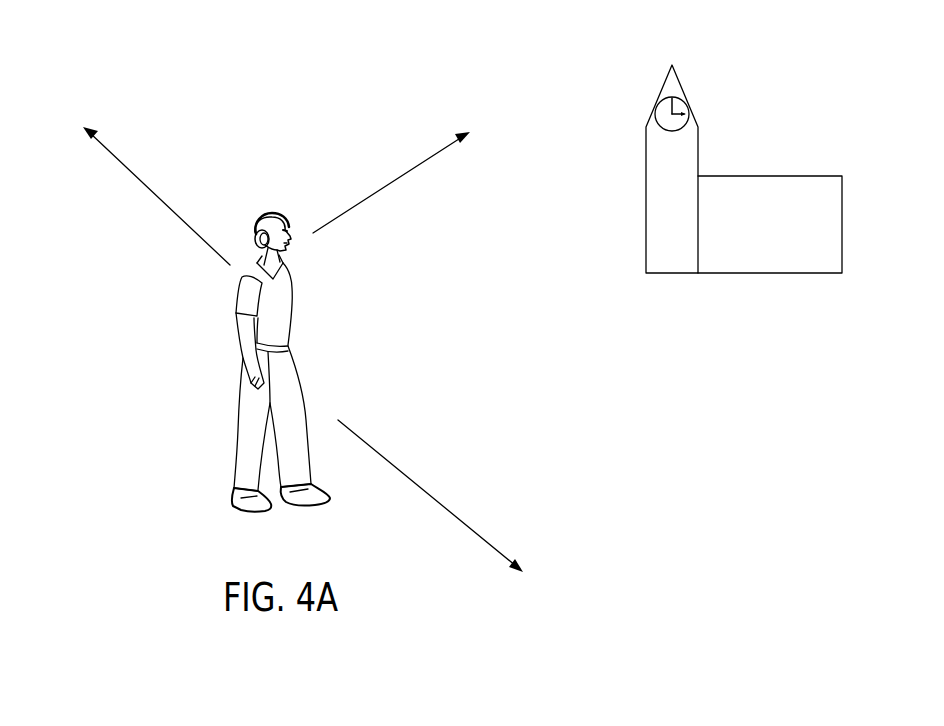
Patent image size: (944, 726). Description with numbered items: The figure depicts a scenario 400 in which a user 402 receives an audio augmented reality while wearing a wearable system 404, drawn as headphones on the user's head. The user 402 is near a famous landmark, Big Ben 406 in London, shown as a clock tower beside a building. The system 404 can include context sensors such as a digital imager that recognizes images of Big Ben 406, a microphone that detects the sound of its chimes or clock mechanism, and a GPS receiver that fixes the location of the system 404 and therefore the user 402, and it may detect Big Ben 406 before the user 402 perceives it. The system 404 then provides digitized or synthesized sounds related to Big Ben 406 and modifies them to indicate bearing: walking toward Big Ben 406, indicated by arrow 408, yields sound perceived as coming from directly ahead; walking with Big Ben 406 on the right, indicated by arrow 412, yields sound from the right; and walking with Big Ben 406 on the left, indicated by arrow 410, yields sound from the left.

The scenario 400 is at (693, 490).
The user 402 is at (220, 342).
The wearable system 404 is at (269, 200).
The Big Ben 406 is at (705, 58).
The arrow 408 is at (415, 165).
The arrow 410 is at (450, 507).
The arrow 412 is at (137, 180).